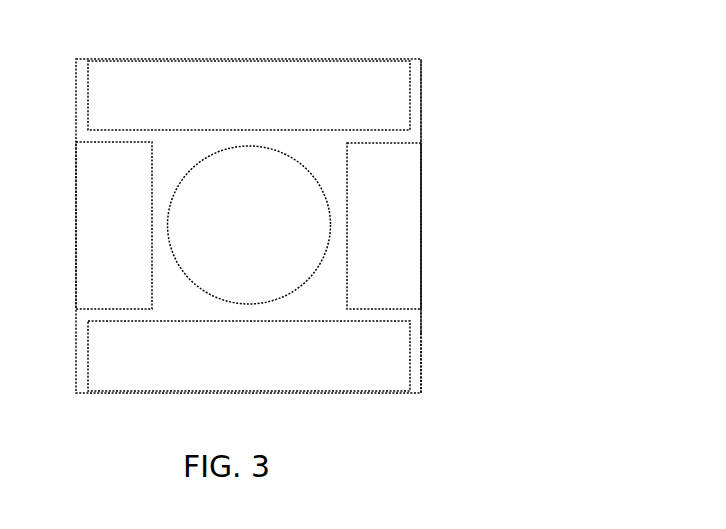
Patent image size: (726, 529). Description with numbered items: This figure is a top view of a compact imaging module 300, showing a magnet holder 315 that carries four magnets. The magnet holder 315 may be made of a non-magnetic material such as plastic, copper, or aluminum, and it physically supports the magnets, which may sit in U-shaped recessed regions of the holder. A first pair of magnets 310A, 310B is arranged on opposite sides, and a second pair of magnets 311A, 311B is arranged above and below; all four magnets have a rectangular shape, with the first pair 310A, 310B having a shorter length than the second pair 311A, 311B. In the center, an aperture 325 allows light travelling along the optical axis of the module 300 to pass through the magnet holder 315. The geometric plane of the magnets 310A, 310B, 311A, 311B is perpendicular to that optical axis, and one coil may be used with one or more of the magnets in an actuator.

The compact imaging module 300 is at (607, 102).
The magnet holder 315 is at (422, 333).
The magnet 311A is at (400, 116).
The magnet 311B is at (403, 387).
The magnet 310A is at (147, 304).
The magnet 310B is at (417, 296).
The aperture 325 is at (260, 274).